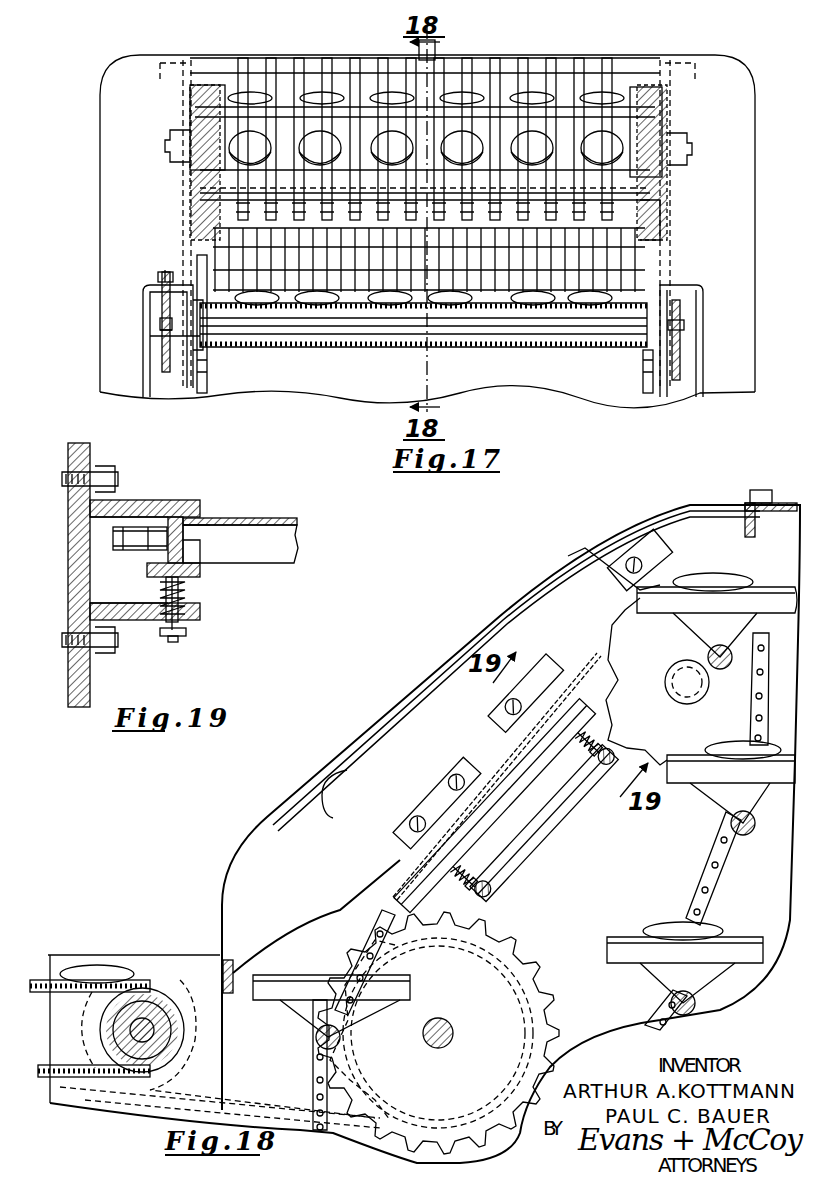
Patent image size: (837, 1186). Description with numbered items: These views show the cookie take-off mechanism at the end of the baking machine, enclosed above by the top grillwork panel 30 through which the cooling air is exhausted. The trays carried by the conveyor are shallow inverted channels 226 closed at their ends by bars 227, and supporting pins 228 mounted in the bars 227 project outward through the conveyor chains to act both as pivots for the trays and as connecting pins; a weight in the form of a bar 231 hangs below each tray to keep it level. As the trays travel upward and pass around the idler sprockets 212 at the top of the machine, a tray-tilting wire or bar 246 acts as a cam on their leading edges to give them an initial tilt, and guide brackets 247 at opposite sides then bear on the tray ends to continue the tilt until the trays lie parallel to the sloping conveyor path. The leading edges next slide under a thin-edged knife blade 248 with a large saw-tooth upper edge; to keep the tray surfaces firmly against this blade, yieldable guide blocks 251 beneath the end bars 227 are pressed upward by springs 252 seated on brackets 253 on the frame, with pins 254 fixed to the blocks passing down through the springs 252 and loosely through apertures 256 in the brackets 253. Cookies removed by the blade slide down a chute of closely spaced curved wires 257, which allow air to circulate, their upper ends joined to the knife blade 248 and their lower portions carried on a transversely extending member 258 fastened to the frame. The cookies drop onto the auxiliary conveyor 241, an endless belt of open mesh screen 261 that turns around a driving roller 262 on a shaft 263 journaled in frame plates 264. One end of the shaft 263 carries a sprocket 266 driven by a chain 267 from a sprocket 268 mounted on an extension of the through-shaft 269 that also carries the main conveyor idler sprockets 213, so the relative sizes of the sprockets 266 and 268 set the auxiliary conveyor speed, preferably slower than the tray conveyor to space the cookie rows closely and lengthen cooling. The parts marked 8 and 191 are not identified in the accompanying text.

In FIG. 17, the conveyor rollers 8 is at (285, 95).
In FIG. 17, the top grillwork panel 30 is at (575, 88).
In FIG. 18, the top grillwork panel 30 is at (455, 681).
In FIG. 17, the link bar 191 is at (207, 390).
In FIG. 19, the link bar 191 is at (117, 552).
In FIG. 18, the link bar 191 is at (705, 902).
In FIG. 17, the idler sprockets 212 is at (190, 124).
In FIG. 18, the idler sprockets 212 is at (676, 722).
In FIG. 18, the main conveyor idler sprockets 213 is at (515, 942).
In FIG. 19, the inverted channels 226 is at (300, 545).
In FIG. 18, the inverted channels 226 is at (612, 937).
In FIG. 19, the bars 227 is at (215, 522).
In FIG. 19, the supporting pins 228 is at (190, 525).
In FIG. 18, the bar 231 is at (736, 996).
In FIG. 17, the auxiliary conveyor 241 is at (527, 360).
In FIG. 18, the auxiliary conveyor 241 is at (42, 1090).
In FIG. 17, the tray-tilting wire or bar 246 is at (432, 82).
In FIG. 18, the tray-tilting wire or bar 246 is at (690, 538).
In FIG. 17, the guide brackets 247 is at (205, 118).
In FIG. 19, the guide brackets 247 is at (165, 500).
In FIG. 18, the guide brackets 247 is at (650, 590).
In FIG. 17, the knife blade 248 is at (660, 212).
In FIG. 18, the knife blade 248 is at (490, 752).
In FIG. 19, the guide blocks 251 is at (200, 556).
In FIG. 18, the guide blocks 251 is at (532, 800).
In FIG. 19, the springs 252 is at (190, 584).
In FIG. 18, the springs 252 is at (463, 868).
In FIG. 19, the brackets 253 is at (152, 620).
In FIG. 18, the brackets 253 is at (590, 805).
In FIG. 19, the pins 254 is at (190, 600).
In FIG. 18, the pins 254 is at (485, 896).
In FIG. 19, the apertures 256 is at (172, 642).
In FIG. 17, the curved wires 257 is at (610, 278).
In FIG. 18, the curved wires 257 is at (333, 917).
In FIG. 17, the transversely extending member 258 is at (225, 340).
In FIG. 18, the transversely extending member 258 is at (233, 965).
In FIG. 17, the open mesh screen 261 is at (308, 348).
In FIG. 18, the open mesh screen 261 is at (40, 985).
In FIG. 17, the driving roller 262 is at (460, 348).
In FIG. 18, the driving roller 262 is at (110, 1050).
In FIG. 17, the shaft 263 is at (160, 324).
In FIG. 18, the shaft 263 is at (145, 1020).
In FIG. 17, the frame plates 264 is at (180, 395).
In FIG. 18, the frame plates 264 is at (110, 955).
In FIG. 17, the sprocket 266 is at (160, 338).
In FIG. 18, the sprocket 266 is at (185, 1048).
In FIG. 17, the chain 267 is at (160, 358).
In FIG. 18, the chain 267 is at (150, 1100).
In FIG. 17, the sprocket 268 is at (166, 272).
In FIG. 18, the sprocket 268 is at (378, 1086).
In FIG. 18, the through-shaft 269 is at (452, 1040).